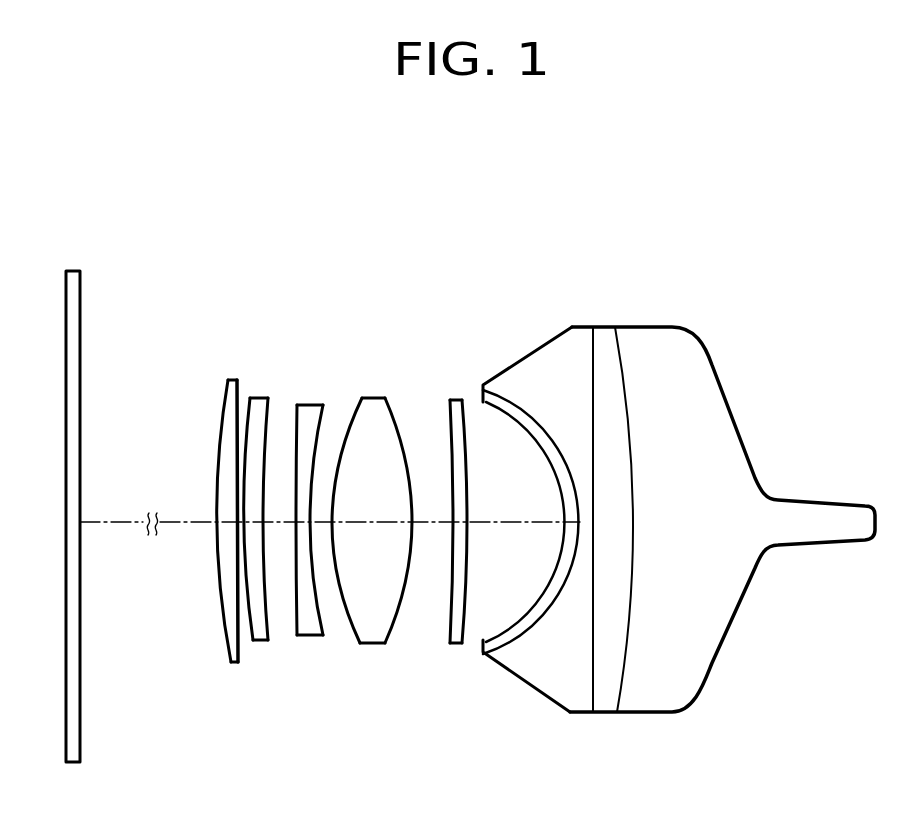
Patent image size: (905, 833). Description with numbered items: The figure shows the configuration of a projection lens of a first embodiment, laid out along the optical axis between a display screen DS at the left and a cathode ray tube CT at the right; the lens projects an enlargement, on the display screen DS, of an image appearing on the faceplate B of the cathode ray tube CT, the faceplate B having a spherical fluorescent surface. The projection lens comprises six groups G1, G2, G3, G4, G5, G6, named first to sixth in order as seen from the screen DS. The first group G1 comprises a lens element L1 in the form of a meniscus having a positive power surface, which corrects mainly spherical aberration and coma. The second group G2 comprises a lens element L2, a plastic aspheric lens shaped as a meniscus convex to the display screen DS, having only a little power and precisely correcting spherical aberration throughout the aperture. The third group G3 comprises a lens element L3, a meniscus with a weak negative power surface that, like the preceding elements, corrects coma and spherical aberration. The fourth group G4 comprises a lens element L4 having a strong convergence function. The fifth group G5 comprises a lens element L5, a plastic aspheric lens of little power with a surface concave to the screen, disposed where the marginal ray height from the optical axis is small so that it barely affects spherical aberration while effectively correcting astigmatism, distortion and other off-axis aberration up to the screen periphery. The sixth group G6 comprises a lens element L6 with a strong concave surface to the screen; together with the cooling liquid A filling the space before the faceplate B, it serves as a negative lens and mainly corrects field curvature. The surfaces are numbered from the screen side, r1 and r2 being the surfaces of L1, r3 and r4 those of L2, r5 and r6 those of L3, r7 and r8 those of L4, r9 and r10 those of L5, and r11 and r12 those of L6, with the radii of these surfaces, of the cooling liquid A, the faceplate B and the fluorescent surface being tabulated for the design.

The display screen DS is at (73, 271).
The first group G1 is at (242, 310).
The second group G2 is at (281, 310).
The third group G3 is at (328, 310).
The fourth group G4 is at (401, 310).
The fifth group G5 is at (460, 310).
The sixth group G6 is at (568, 247).
The lens element L1 is at (201, 530).
The lens element L2 is at (277, 544).
The lens element L3 is at (322, 543).
The lens element L4 is at (379, 532).
The lens element L5 is at (475, 538).
The lens element L6 is at (577, 312).
The surface radius r1 is at (223, 639).
The surface radius r2 is at (245, 652).
The surface radius r3 is at (252, 643).
The surface radius r4 is at (290, 630).
The surface radius r5 is at (296, 630).
The surface radius r6 is at (328, 622).
The surface radius r7 is at (350, 630).
The surface radius r8 is at (397, 623).
The surface radius r9 is at (448, 618).
The surface radius r10 is at (468, 622).
The surface radius r11 is at (512, 625).
The surface radius r12 is at (535, 532).
The cooling liquid A is at (535, 561).
The faceplate B is at (605, 702).
The cathode ray tube CT is at (686, 673).